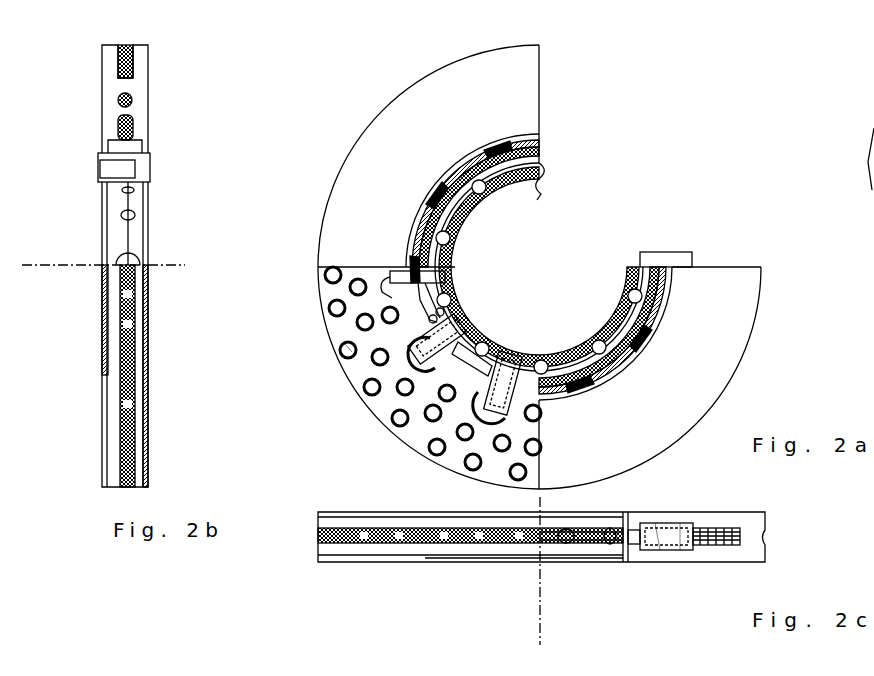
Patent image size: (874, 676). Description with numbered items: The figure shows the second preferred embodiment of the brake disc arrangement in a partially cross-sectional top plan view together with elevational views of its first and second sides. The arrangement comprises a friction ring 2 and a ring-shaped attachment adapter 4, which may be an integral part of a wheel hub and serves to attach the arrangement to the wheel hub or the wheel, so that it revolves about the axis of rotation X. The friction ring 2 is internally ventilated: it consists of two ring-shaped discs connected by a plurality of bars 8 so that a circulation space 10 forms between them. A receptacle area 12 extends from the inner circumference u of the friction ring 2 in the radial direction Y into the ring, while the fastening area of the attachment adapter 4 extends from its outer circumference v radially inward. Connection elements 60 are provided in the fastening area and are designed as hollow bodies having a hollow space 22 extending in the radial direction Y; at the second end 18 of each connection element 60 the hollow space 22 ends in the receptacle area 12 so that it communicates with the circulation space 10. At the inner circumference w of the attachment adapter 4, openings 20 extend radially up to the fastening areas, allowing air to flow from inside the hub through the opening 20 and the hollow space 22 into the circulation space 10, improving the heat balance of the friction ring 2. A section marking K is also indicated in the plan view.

In FIG. 2A, the friction ring 2 is at (873, 90).
In FIG. 2B, the friction ring 2 is at (124, 266).
In FIG. 2C, the friction ring 2 is at (365, 548).
In FIG. 2C, the attachment adapter 4 is at (576, 547).
In FIG. 2A, the bars 8 is at (350, 356).
In FIG. 2A, the circulation space 10 is at (378, 415).
In FIG. 2C, the receptacle area 12 is at (684, 522).
In FIG. 2C, the second end 18 is at (659, 522).
In FIG. 2A, the openings 20 is at (512, 350).
In FIG. 2C, the openings 20 is at (627, 550).
In FIG. 2A, the hollow space 22 is at (478, 340).
In FIG. 2C, the hollow space 22 is at (678, 552).
In FIG. 2A, the connection elements 60 is at (666, 256).
In FIG. 2C, the connection elements 60 is at (656, 552).
In FIG. 2A, the inner circumference u is at (545, 142).
In FIG. 2A, the outer circumference v is at (545, 150).
In FIG. 2A, the inner circumference w is at (532, 190).
In FIG. 2A, the section line K is at (445, 272).
In FIG. 2B, the axis of rotation X is at (27, 273).
In FIG. 2C, the axis of rotation X is at (540, 650).
In FIG. 2A, the radial direction Y is at (300, 312).